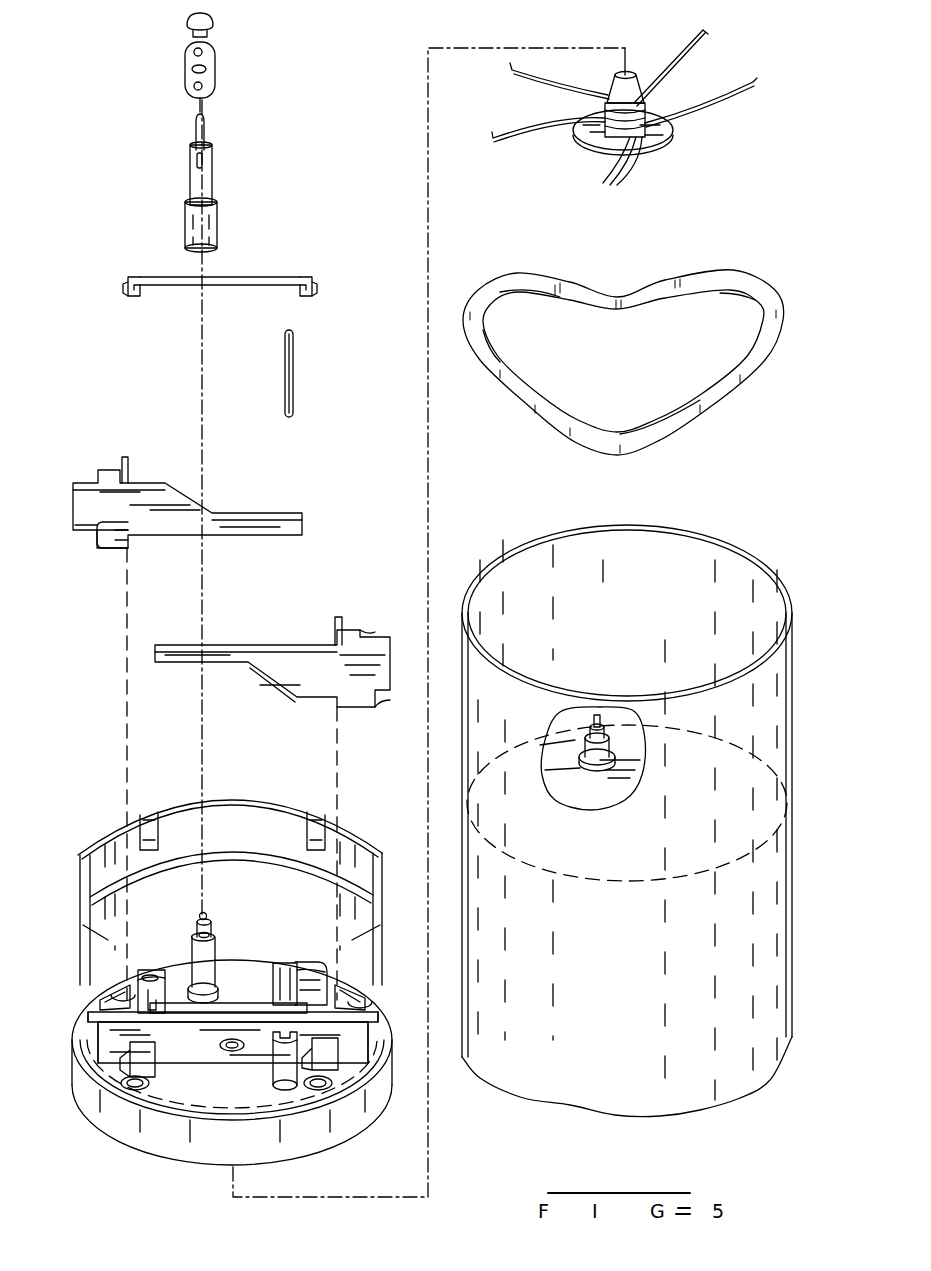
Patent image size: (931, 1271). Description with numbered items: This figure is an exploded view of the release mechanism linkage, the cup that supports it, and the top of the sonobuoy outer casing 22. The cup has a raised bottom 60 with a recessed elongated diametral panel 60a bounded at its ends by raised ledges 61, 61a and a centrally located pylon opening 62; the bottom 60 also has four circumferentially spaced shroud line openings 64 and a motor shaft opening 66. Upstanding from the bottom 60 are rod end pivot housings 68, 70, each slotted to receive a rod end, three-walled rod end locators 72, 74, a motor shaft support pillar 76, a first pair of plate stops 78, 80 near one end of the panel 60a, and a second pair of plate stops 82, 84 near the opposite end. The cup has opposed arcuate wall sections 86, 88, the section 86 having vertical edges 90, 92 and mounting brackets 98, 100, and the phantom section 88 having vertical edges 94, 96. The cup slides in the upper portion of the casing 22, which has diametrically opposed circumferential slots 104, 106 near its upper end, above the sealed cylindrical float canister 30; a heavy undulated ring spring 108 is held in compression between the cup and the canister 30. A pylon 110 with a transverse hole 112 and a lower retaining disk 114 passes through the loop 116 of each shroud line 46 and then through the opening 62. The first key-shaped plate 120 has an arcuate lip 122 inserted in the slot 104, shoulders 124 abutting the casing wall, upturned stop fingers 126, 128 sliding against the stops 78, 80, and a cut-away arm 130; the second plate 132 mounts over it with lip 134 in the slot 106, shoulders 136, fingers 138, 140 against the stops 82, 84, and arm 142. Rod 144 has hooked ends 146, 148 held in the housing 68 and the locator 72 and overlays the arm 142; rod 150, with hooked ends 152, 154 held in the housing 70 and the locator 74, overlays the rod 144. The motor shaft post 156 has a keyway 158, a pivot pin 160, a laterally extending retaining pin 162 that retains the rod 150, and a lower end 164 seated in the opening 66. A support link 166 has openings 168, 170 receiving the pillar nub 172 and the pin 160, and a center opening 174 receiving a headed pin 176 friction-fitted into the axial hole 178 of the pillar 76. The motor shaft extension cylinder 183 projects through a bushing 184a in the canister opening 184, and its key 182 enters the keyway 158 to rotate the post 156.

The cylindrical outer casing 22 is at (630, 806).
The float canister 30 is at (778, 850).
The shroud line 46 is at (530, 90).
The raised bottom 60 is at (365, 1000).
The recessed elongated diametral panel 60a is at (200, 1042).
The raised ledge 61 is at (375, 1045).
The raised ledge 61a is at (90, 1040).
The pylon opening 62 is at (225, 1048).
The shroud line openings 64 is at (118, 1000).
The motor shaft opening 66 is at (218, 978).
The rod end pivot housing 68 is at (275, 1062).
The rod end pivot housing 70 is at (312, 965).
The three-walled rod end locator 72 is at (277, 965).
The three-walled rod end locator 74 is at (150, 970).
The motor shaft support pillar 76 is at (214, 945).
The plate stop 78 is at (350, 990).
The plate stop 80 is at (340, 1053).
The plate stop 82 is at (100, 997).
The plate stop 84 is at (128, 1053).
The arcuate wall section 86 is at (227, 869).
The arcuate wall section 88 is at (110, 845).
The vertical edge 90 is at (78, 870).
The vertical edge 92 is at (382, 868).
The vertical edge 94 is at (85, 940).
The vertical edge 96 is at (382, 938).
The mounting bracket 98 is at (152, 812).
The mounting bracket 100 is at (316, 812).
The circumferential slot 104 is at (790, 725).
The circumferential slot 106 is at (463, 725).
The spring 108 is at (706, 272).
The pylon 110 is at (617, 108).
The transverse hole 112 is at (617, 88).
The shroud line loop retaining disk 114 is at (648, 152).
The loop 116 is at (615, 160).
The first key-shaped plate 120 is at (289, 646).
The arcuate lip 122 is at (390, 665).
The shoulder 124 is at (385, 632).
The upturned stop finger 126 is at (340, 617).
The upturned stop finger 128 is at (336, 688).
The arm 130 is at (182, 650).
The second plate 132 is at (174, 507).
The lip 134 is at (73, 500).
The shoulders 136 is at (98, 483).
The finger 138 is at (126, 457).
The finger 140 is at (110, 548).
The arm 142 is at (270, 525).
The elongated rod 144 is at (319, 370).
The downturned hooked end 146 is at (290, 414).
The downturned hooked end 148 is at (290, 331).
The elongated rod 150 is at (238, 259).
The downturned hooked end 152 is at (316, 289).
The downturned hooked end 154 is at (135, 274).
The motor shaft post 156 is at (212, 178).
The axial keyway 158 is at (200, 243).
The cylindrical pivot pin 160 is at (206, 128).
The retaining pin 162 is at (197, 160).
The lower end 164 is at (186, 208).
The support link 166 is at (215, 70).
The opening 168 is at (194, 52).
The opening 170 is at (194, 87).
The nub 172 is at (201, 913).
The center opening 174 is at (192, 69).
The headed pin 176 is at (186, 25).
The axial hole 178 is at (198, 930).
The key 182 is at (600, 715).
The motor shaft extension cylinder 183 is at (612, 750).
The opening 184 is at (585, 790).
The bushing 184a is at (555, 772).